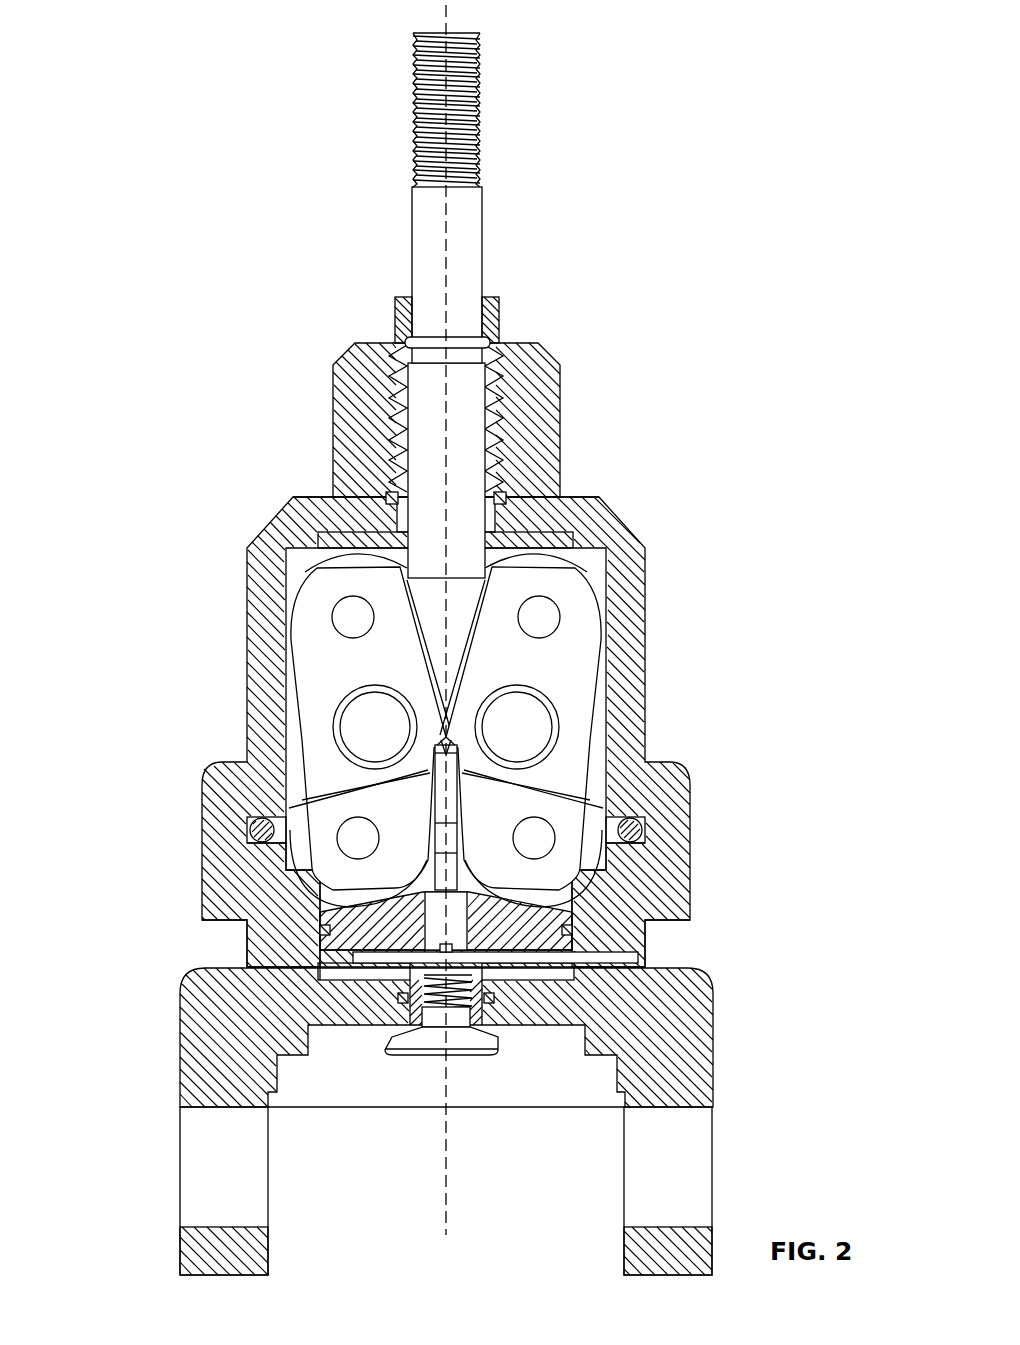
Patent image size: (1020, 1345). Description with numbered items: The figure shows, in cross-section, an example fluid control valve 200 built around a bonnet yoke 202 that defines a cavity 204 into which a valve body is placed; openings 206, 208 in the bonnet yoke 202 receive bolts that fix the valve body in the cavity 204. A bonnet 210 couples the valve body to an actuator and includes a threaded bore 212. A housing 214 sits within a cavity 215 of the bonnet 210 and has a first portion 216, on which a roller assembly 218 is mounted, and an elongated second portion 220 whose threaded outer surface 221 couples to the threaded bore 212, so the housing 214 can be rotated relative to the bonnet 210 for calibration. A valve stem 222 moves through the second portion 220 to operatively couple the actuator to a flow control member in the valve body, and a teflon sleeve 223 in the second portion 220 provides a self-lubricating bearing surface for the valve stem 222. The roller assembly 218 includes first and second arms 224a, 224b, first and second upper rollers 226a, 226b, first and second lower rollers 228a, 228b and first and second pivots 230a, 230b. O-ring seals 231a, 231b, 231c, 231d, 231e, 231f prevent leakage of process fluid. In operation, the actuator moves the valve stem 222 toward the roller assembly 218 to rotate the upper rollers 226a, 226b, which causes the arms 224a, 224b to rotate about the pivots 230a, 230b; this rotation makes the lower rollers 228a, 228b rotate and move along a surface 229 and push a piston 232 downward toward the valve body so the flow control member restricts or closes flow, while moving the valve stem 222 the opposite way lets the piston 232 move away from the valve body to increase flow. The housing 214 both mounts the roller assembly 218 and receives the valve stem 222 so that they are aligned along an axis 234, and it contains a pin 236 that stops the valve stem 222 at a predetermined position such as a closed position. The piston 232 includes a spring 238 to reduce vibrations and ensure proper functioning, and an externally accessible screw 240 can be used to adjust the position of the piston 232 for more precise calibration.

The fluid control valve 200 is at (183, 115).
The bonnet yoke 202 is at (215, 1278).
The cavity 204 is at (431, 1186).
The opening 206 is at (182, 1150).
The opening 208 is at (712, 1145).
The bonnet 210 is at (643, 573).
The threaded bore 212 is at (385, 410).
The housing 214 is at (297, 537).
The cavity 215 is at (598, 550).
The first portion 216 is at (606, 688).
The roller assembly 218 is at (286, 676).
The elongated second portion 220 is at (510, 432).
The threaded outer surface 221 is at (505, 400).
The valve stem 222 is at (482, 235).
The teflon sleeve 223 is at (460, 375).
The first arm 224a is at (320, 734).
The second arm 224b is at (570, 760).
The first upper roller 226a is at (303, 585).
The second upper roller 226b is at (593, 588).
The first lower roller 228a is at (300, 868).
The second lower roller 228b is at (620, 815).
The surface 229 is at (572, 905).
The first pivot 230a is at (360, 718).
The second pivot 230b is at (540, 730).
The O-ring seal 231a is at (410, 343).
The O-ring seal 231b is at (388, 495).
The O-ring seal 231c is at (257, 830).
The O-ring seal 231d is at (325, 930).
The O-ring seal 231e is at (400, 1000).
The O-ring seal 231f is at (428, 1015).
The piston 232 is at (510, 1045).
The axis 234 is at (446, 30).
The pin 236 is at (438, 765).
The spring 238 is at (425, 995).
The screw 240 is at (640, 958).